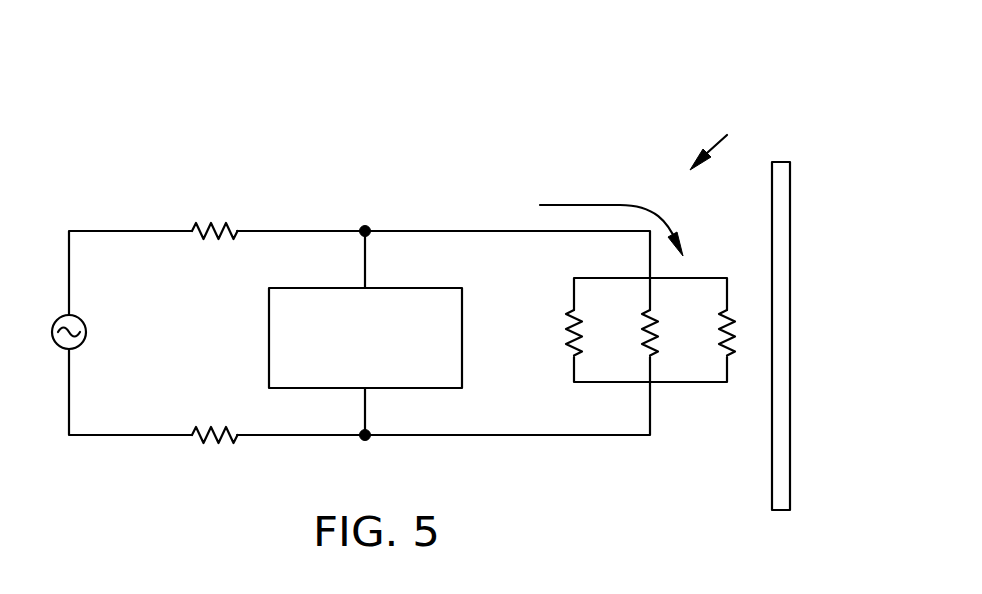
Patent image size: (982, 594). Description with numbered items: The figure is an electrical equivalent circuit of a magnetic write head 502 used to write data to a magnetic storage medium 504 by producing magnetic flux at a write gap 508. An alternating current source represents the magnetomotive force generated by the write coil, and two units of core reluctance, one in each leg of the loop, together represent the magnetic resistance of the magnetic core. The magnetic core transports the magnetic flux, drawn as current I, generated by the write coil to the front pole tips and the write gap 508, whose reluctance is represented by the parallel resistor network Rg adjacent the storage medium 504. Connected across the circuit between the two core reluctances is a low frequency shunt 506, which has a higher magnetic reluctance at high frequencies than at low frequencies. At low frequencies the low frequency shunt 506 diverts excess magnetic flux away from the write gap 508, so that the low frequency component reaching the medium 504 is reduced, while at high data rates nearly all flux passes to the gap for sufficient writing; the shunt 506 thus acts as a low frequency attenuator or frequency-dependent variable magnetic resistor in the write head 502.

The magnetic write head 502 is at (450, 190).
The magnetic storage medium 504 is at (790, 244).
The low frequency shunt 506 is at (268, 348).
The write gap 508 is at (733, 354).